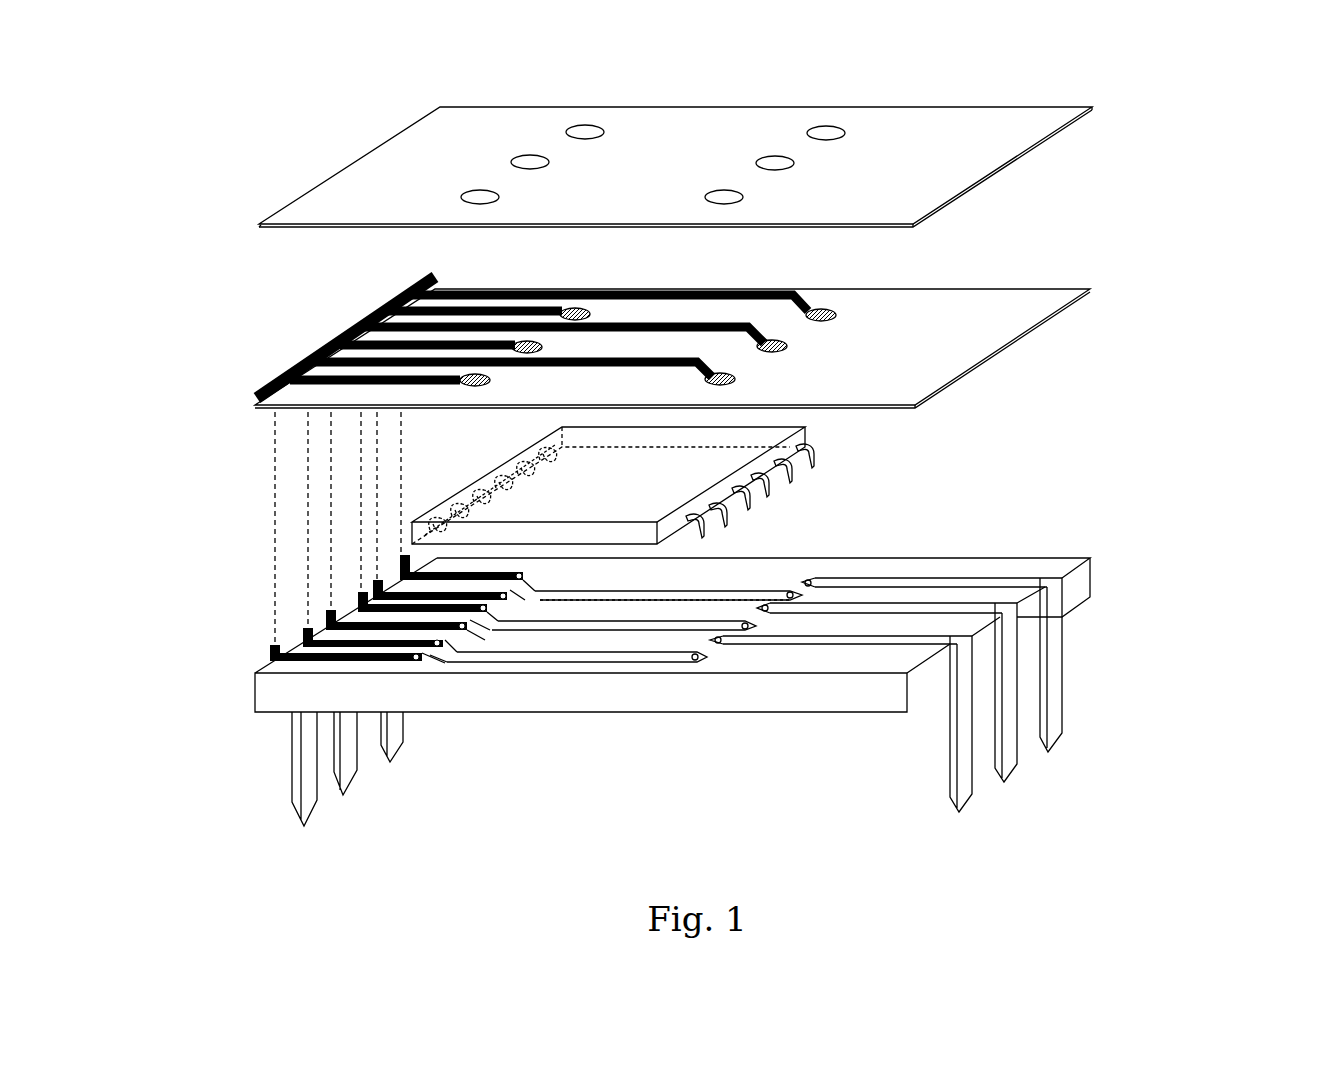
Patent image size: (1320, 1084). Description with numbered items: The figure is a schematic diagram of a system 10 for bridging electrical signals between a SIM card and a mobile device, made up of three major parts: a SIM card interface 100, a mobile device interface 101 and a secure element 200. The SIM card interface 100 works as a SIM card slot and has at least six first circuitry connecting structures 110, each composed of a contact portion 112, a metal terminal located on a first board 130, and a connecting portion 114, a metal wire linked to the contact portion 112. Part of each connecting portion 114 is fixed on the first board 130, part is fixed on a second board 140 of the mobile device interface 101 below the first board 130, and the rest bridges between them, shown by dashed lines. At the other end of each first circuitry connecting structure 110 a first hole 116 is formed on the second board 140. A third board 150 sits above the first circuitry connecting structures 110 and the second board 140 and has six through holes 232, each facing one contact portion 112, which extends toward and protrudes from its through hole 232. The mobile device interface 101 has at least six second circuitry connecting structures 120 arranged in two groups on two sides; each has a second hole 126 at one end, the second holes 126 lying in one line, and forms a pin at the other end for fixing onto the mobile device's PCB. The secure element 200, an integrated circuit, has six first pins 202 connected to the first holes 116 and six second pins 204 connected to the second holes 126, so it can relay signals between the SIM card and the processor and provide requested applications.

The system 10 is at (192, 147).
The SIM card interface 100 is at (1115, 147).
The mobile device interface 101 is at (1137, 490).
The first circuitry connecting structure 110 is at (403, 282).
The contact portion 112 is at (737, 380).
The connecting portion 114 is at (255, 395).
The first hole 116 is at (418, 660).
The second circuitry connecting structure 120 is at (860, 575).
The second hole 126 is at (815, 581).
The first board 130 is at (958, 378).
The second board 140 is at (1013, 557).
The third board 150 is at (965, 192).
The secure element 200 is at (762, 428).
The first pins 202 is at (537, 447).
The second pins 204 is at (790, 478).
The through hole 232 is at (550, 163).